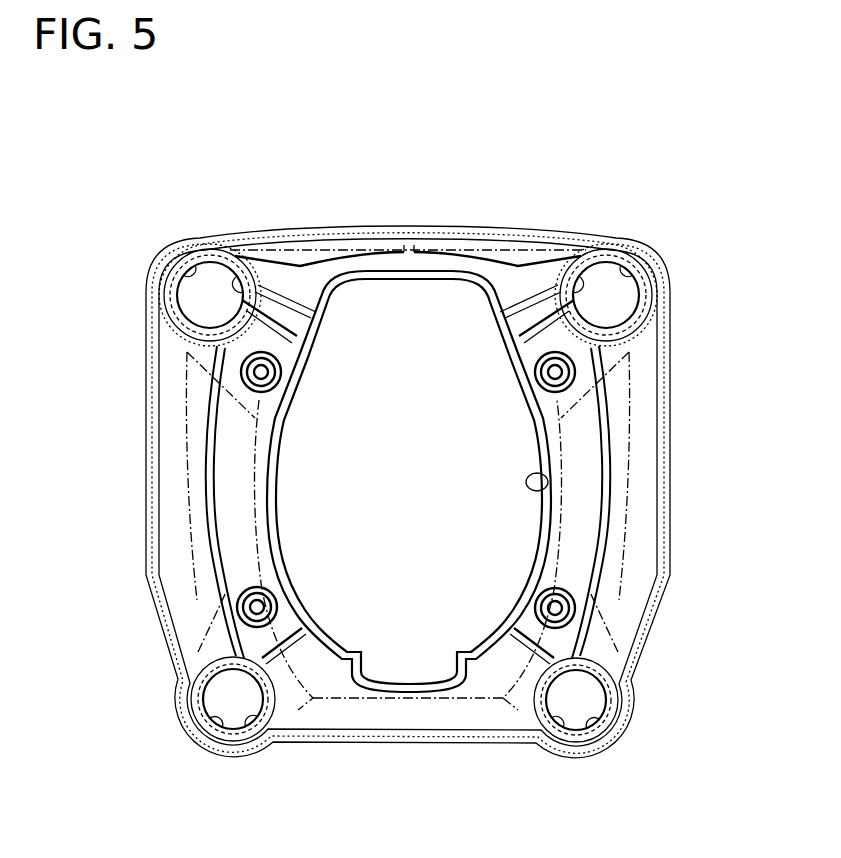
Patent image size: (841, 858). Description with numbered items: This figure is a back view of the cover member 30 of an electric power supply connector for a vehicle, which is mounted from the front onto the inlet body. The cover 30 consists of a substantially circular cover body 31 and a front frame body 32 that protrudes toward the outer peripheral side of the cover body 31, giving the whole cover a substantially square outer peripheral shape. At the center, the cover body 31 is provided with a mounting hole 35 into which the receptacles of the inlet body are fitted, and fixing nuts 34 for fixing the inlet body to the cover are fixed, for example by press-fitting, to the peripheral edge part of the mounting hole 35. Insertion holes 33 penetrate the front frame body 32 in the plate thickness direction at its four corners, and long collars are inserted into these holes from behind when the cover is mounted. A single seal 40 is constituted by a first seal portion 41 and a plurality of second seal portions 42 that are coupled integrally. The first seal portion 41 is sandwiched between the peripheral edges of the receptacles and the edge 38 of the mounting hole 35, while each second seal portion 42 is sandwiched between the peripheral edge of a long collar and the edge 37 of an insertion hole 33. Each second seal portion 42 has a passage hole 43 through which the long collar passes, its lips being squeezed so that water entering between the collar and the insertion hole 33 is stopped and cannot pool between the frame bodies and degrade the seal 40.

The cover member 30 is at (408, 194).
The cover body 31 is at (592, 460).
The front frame body 32 is at (640, 503).
The insertion holes 33 is at (185, 272).
The fixing nuts 34 is at (247, 389).
The mounting hole 35 is at (550, 482).
The edges of the insertion holes 37 is at (173, 289).
The edge of the mounting hole 38 is at (560, 530).
The seal 40 is at (621, 369).
The first seal portion 41 is at (255, 475).
The second seal portions 42 is at (187, 352).
The passage hole 43 is at (241, 243).